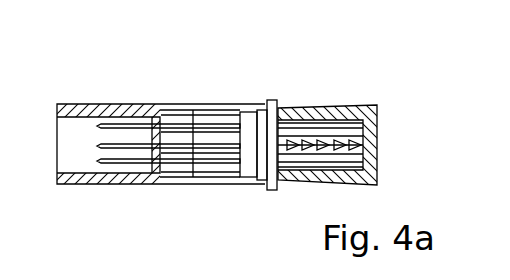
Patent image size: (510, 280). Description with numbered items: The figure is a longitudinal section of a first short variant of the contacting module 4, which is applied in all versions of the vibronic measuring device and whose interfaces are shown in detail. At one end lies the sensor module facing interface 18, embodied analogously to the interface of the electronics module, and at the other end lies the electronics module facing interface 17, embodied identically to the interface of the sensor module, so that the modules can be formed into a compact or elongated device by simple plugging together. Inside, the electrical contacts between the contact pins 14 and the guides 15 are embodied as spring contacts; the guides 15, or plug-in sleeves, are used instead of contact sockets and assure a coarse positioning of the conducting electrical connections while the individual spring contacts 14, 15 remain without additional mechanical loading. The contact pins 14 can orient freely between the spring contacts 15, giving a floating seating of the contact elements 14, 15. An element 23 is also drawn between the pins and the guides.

The contacting module 4 is at (398, 127).
The contact pins 14 is at (127, 126).
The guides 15 is at (325, 143).
The electronics module facing interface 17 is at (377, 155).
The sensor module facing interface 18 is at (78, 136).
The insulating body 23 is at (250, 118).